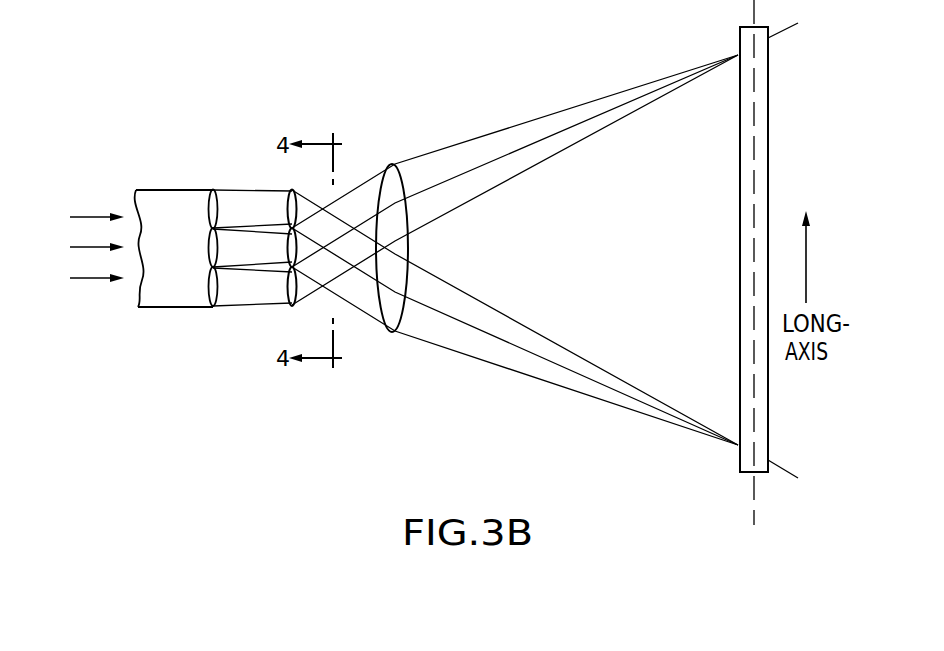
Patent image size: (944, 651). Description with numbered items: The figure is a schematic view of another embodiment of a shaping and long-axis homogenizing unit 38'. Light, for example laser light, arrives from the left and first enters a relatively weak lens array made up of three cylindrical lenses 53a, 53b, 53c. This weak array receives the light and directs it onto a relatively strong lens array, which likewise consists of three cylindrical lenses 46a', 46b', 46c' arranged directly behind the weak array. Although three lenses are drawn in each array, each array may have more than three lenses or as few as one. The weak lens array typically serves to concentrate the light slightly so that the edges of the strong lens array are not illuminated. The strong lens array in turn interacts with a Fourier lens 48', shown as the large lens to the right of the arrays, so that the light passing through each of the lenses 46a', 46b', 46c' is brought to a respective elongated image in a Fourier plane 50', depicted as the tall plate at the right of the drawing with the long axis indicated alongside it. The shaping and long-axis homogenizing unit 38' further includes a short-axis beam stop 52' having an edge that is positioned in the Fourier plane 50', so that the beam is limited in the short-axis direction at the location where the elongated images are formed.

The shaping and long-axis homogenizing unit 38' is at (545, 249).
The cylindrical lens 46a' is at (267, 197).
The cylindrical lens 46b' is at (248, 204).
The cylindrical lens 46c' is at (255, 304).
The Fourier lens 48' is at (409, 299).
The Fourier plane 50' is at (708, 262).
The short-axis beam stop 52' is at (687, 249).
The cylindrical lens 53a is at (210, 211).
The cylindrical lens 53b is at (209, 253).
The cylindrical lens 53c is at (208, 289).